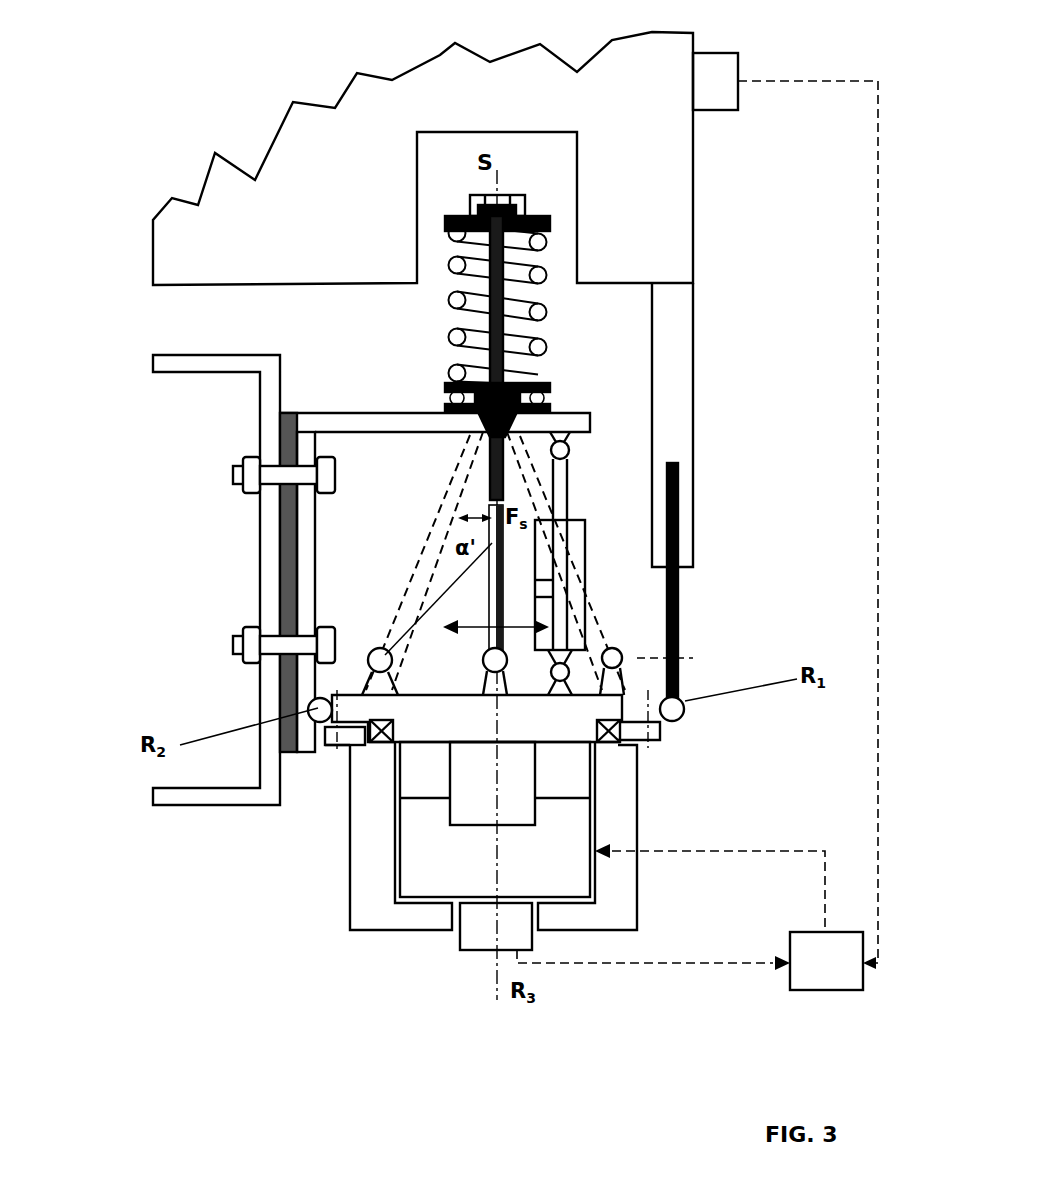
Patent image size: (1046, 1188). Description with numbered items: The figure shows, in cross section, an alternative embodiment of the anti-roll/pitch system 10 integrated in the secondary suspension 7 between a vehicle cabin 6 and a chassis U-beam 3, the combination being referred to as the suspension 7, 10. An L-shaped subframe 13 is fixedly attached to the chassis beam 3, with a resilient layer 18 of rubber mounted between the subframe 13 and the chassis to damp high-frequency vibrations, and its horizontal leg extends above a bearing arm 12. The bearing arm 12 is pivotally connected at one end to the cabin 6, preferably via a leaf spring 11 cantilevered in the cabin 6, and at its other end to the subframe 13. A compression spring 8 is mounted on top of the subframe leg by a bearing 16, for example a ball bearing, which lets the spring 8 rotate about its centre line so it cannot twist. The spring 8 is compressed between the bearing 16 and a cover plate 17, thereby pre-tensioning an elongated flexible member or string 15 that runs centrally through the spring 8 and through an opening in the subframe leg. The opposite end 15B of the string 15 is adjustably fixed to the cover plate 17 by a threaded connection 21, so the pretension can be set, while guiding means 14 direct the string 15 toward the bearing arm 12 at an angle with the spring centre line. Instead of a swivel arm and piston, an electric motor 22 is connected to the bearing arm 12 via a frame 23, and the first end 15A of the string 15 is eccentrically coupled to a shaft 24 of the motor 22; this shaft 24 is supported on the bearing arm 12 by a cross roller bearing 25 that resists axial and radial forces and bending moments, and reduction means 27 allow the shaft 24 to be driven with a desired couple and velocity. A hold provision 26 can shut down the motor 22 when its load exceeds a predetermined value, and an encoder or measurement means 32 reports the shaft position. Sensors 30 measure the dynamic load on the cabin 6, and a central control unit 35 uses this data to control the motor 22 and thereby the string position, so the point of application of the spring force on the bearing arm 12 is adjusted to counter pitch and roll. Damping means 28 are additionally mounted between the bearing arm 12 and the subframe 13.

The U-beam 3 is at (218, 366).
The cabin 6 is at (665, 148).
The secondary suspension 7 is at (103, 257).
The spring 8 is at (547, 310).
The anti-roll/pitch system 10 is at (178, 316).
The leaf spring 11 is at (687, 614).
The bearing arm 12 is at (350, 722).
The subframe 13 is at (297, 698).
The guiding means 14 is at (470, 417).
The elongated flexible member 15 is at (493, 365).
The first end of the string 15A is at (376, 634).
The opposite end of the string 15B is at (480, 214).
The bearing 16 is at (548, 385).
The cover plate 17 is at (552, 221).
The resilient layer 18 is at (285, 547).
The threaded connection 21 is at (525, 196).
The electric motor 22 is at (495, 819).
The frame 23 is at (607, 880).
The shaft 24 is at (492, 720).
The cross roller bearing 25 is at (663, 729).
The hold provision 26 is at (495, 783).
The reduction means 27 is at (575, 768).
The damping means 28 is at (575, 486).
The sensor 30 is at (785, 511).
The measurement means 32 is at (625, 936).
The central control unit 35 is at (826, 961).